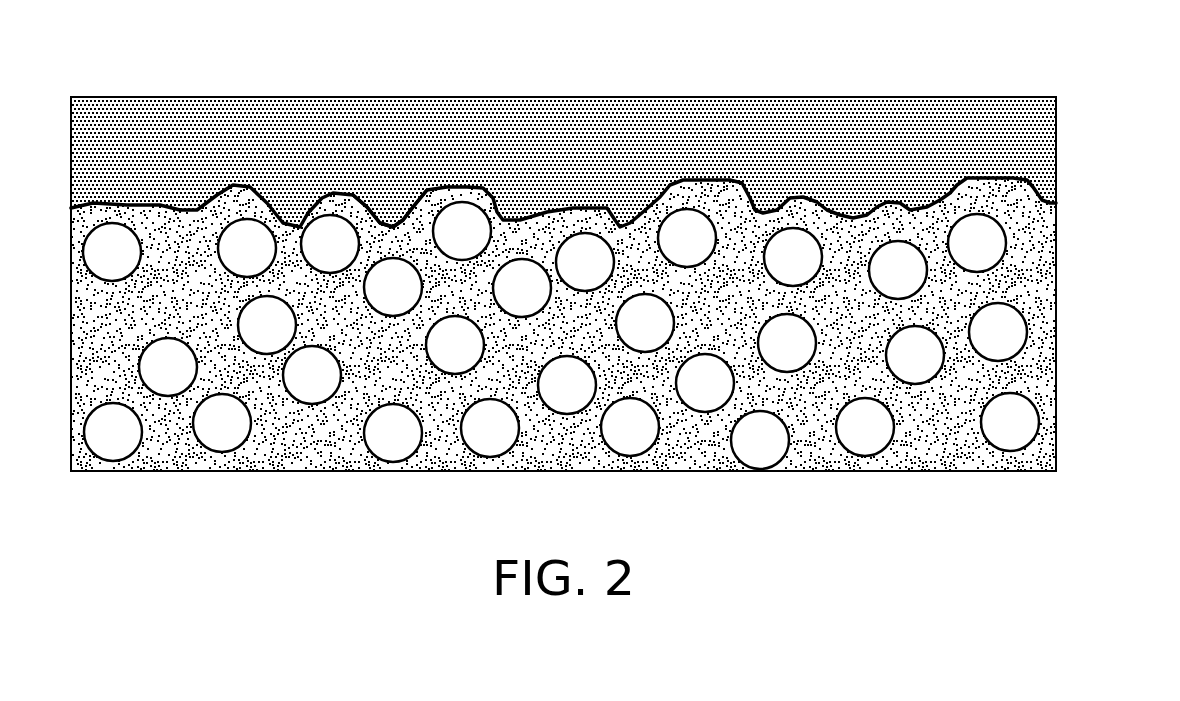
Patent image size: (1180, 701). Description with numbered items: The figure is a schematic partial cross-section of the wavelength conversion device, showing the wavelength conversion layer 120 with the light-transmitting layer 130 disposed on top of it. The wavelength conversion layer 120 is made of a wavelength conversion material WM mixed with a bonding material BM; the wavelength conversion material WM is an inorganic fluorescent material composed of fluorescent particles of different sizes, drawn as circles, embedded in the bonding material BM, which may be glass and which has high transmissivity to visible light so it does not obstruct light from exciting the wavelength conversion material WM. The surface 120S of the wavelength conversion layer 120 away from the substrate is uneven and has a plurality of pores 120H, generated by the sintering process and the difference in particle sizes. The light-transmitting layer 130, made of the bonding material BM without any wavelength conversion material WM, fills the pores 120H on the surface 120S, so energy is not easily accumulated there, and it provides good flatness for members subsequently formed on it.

The wavelength conversion layer 120 is at (619, 255).
The pores 120H is at (389, 192).
The surface of the wavelength conversion layer 120S is at (803, 197).
The light-transmitting layer 130 is at (1047, 143).
The wavelength conversion material WM is at (998, 243).
The bonding material BM is at (1048, 297).